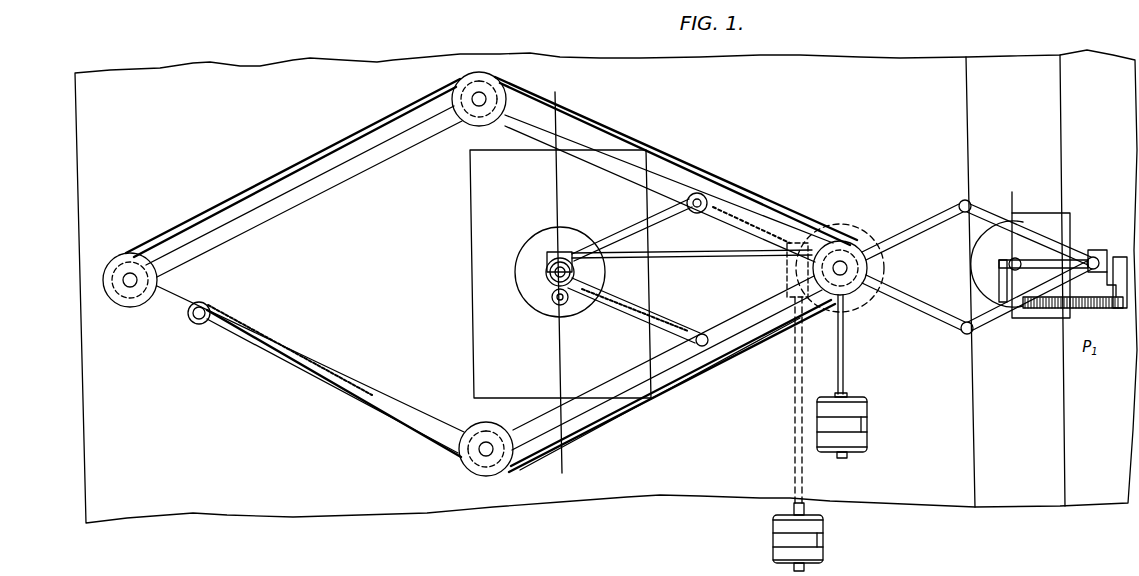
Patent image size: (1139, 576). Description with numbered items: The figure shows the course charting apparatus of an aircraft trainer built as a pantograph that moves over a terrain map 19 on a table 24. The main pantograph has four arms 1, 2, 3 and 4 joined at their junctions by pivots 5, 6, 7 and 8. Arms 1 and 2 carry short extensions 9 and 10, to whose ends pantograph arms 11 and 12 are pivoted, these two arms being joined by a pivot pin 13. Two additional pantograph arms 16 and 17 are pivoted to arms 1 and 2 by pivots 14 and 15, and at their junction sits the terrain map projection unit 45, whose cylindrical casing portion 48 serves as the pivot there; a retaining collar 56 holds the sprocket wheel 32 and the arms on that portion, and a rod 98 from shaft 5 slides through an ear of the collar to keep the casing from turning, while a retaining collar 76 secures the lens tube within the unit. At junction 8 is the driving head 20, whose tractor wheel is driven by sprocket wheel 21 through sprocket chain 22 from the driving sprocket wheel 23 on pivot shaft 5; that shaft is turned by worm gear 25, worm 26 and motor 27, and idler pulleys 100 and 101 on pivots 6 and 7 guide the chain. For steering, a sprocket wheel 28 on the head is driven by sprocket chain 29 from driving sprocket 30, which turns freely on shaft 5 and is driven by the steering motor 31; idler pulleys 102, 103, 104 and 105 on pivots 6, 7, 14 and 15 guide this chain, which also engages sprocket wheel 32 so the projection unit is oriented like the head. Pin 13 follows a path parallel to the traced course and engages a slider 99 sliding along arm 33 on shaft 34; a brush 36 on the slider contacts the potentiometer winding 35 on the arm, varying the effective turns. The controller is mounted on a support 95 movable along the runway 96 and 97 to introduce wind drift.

The pantograph arm 1 is at (528, 124).
The pantograph arm 2 is at (520, 430).
The pantograph arm 3 is at (303, 200).
The pantograph arm 4 is at (352, 368).
The pivot shaft 5 is at (843, 262).
The pivot 6 is at (495, 460).
The pivot 7 is at (470, 96).
The pivot 8 is at (130, 275).
The short extension 9 is at (893, 240).
The short extension 10 is at (903, 309).
The pantograph arm 11 is at (975, 208).
The pantograph arm 12 is at (991, 325).
The pivot pin 13 is at (1090, 256).
The pivot 14 is at (702, 198).
The pivot 15 is at (704, 333).
The pantograph arm 16 is at (671, 224).
The pantograph arm 17 is at (614, 292).
The terrain map 19 is at (470, 292).
The driving head 20 is at (128, 308).
The sprocket wheel 21 is at (160, 280).
The sprocket chain 22 is at (192, 212).
The driving sprocket wheel 23 is at (868, 270).
The table 24 is at (645, 500).
The worm gear 25 is at (836, 230).
The worm 26 is at (787, 267).
The motor 27 is at (825, 545).
The sprocket wheel 28 is at (113, 262).
The sprocket chain 29 is at (248, 186).
The driving sprocket 30 is at (852, 344).
The steering motor 31 is at (869, 425).
The sprocket wheel 32 is at (547, 282).
The arm 33 is at (1118, 256).
The shaft 34 is at (1013, 258).
The potentiometer winding 35 is at (1078, 310).
The brush 36 is at (1110, 309).
The terrain map projection unit 45 is at (522, 238).
The cylindrical portion 48 is at (547, 273).
The retaining collar 56 is at (540, 268).
The retaining collar 76 is at (561, 262).
The support 95 is at (972, 246).
The runway 96 is at (978, 416).
The runway 97 is at (1062, 440).
The rod 98 is at (685, 262).
The slider 99 is at (1100, 250).
The idler pulley 100 is at (476, 470).
The idler pulley 101 is at (490, 82).
The idler pulley 102 is at (470, 432).
The idler pulley 103 is at (473, 114).
The idler pulley 104 is at (700, 212).
The idler pulley 105 is at (712, 354).